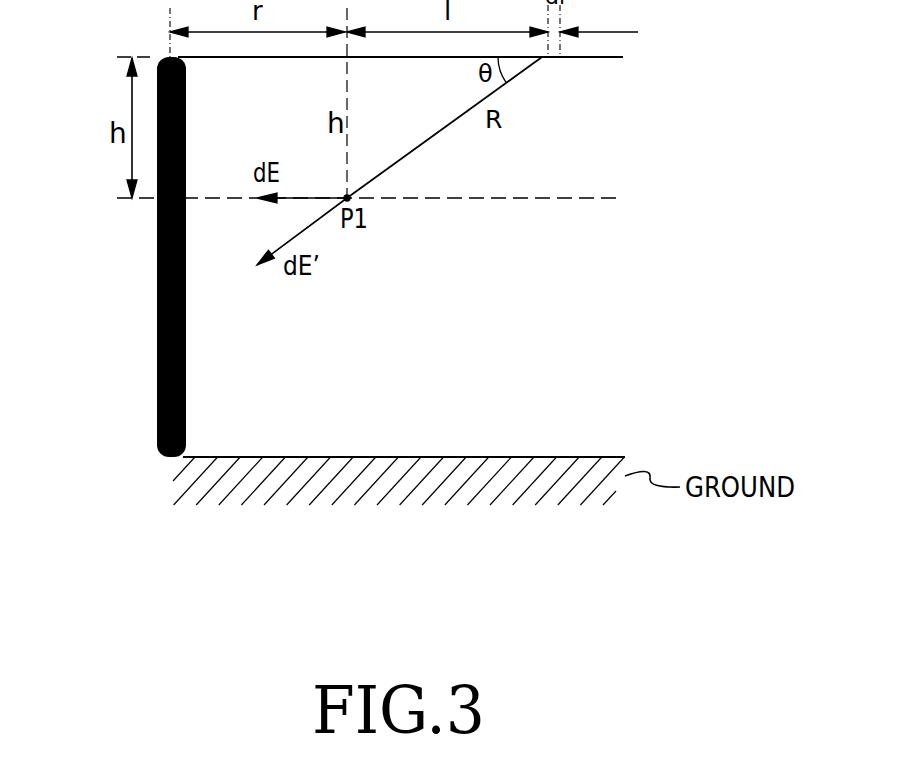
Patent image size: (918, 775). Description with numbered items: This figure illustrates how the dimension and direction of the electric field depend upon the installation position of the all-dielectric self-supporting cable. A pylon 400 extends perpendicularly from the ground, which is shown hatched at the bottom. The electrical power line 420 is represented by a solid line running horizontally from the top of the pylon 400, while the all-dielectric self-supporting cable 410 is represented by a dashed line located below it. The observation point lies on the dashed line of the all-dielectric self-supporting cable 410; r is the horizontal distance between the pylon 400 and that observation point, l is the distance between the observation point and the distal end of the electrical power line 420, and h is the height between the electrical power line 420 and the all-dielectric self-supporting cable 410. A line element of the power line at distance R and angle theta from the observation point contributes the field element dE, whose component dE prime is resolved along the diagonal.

The pylon 400 is at (158, 364).
The all-dielectric self-supporting cable 410 is at (575, 198).
The electrical power line 420 is at (588, 57).